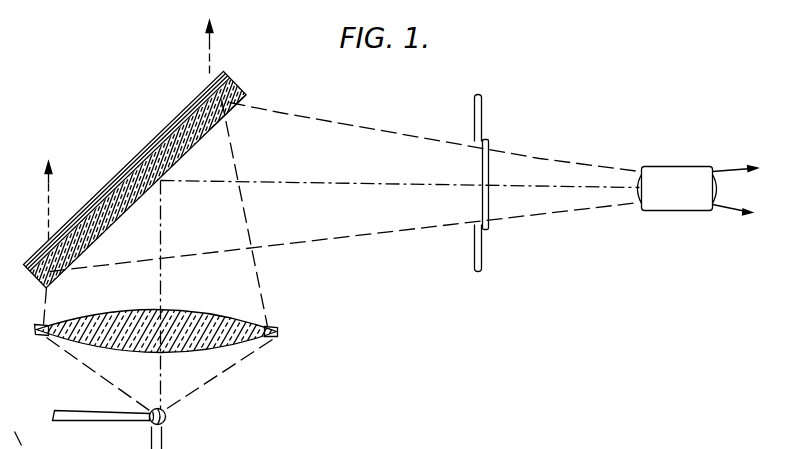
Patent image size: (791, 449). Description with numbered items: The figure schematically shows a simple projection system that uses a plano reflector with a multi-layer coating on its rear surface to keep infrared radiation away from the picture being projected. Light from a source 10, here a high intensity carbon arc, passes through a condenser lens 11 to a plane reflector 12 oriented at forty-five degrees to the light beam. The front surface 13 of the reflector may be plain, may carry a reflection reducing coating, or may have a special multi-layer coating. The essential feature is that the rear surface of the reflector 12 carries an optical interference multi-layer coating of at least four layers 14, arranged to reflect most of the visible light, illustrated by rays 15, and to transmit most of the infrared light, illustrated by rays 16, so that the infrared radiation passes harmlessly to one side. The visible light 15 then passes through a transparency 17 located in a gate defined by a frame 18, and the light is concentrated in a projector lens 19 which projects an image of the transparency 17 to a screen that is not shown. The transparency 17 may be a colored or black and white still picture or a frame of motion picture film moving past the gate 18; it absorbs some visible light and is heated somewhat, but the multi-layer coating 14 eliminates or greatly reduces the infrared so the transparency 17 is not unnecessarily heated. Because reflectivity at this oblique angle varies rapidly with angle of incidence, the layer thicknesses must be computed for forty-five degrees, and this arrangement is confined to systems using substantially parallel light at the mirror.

The source 10 is at (167, 417).
The condenser lens 11 is at (278, 330).
The plane reflector 12 is at (238, 90).
The front surface 13 is at (229, 106).
The multi-layer coating 14 is at (225, 74).
The rays of visible light 15 is at (379, 117).
The rays of infrared light 16 is at (209, 51).
The transparency 17 is at (490, 143).
The frame 18 is at (477, 97).
The projector lens 19 is at (670, 172).